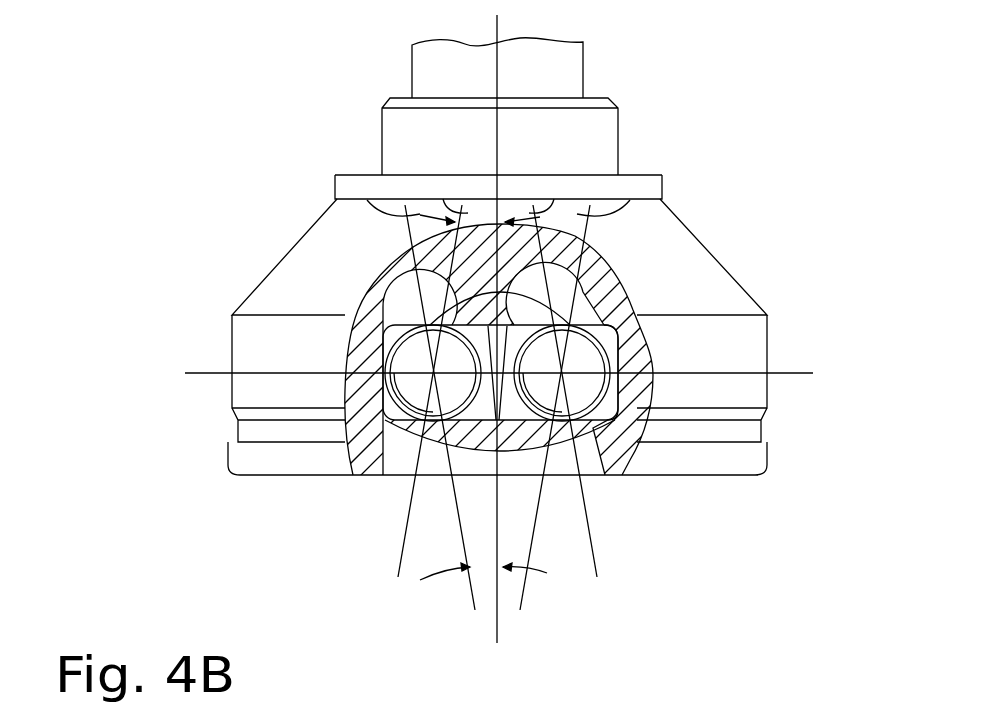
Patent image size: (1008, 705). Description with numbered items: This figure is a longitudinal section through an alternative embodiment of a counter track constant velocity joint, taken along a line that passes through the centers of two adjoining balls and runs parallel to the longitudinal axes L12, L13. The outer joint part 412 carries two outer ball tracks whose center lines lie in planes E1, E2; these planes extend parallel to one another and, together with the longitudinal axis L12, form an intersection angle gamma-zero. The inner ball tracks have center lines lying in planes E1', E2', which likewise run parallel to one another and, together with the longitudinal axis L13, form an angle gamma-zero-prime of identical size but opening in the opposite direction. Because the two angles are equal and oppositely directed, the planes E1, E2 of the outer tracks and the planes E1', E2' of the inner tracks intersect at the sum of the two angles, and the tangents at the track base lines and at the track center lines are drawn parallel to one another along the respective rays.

The longitudinal axis of the outer joint part L12 is at (497, 35).
The longitudinal axis of the inner joint part L13 is at (500, 632).
The outer joint part 412 is at (748, 353).
The plane of the outer track center line E1 is at (365, 375).
The plane of the inner track center line E1' is at (311, 355).
The plane of the outer track center line E2 is at (633, 375).
The plane of the inner track center line E2' is at (679, 355).